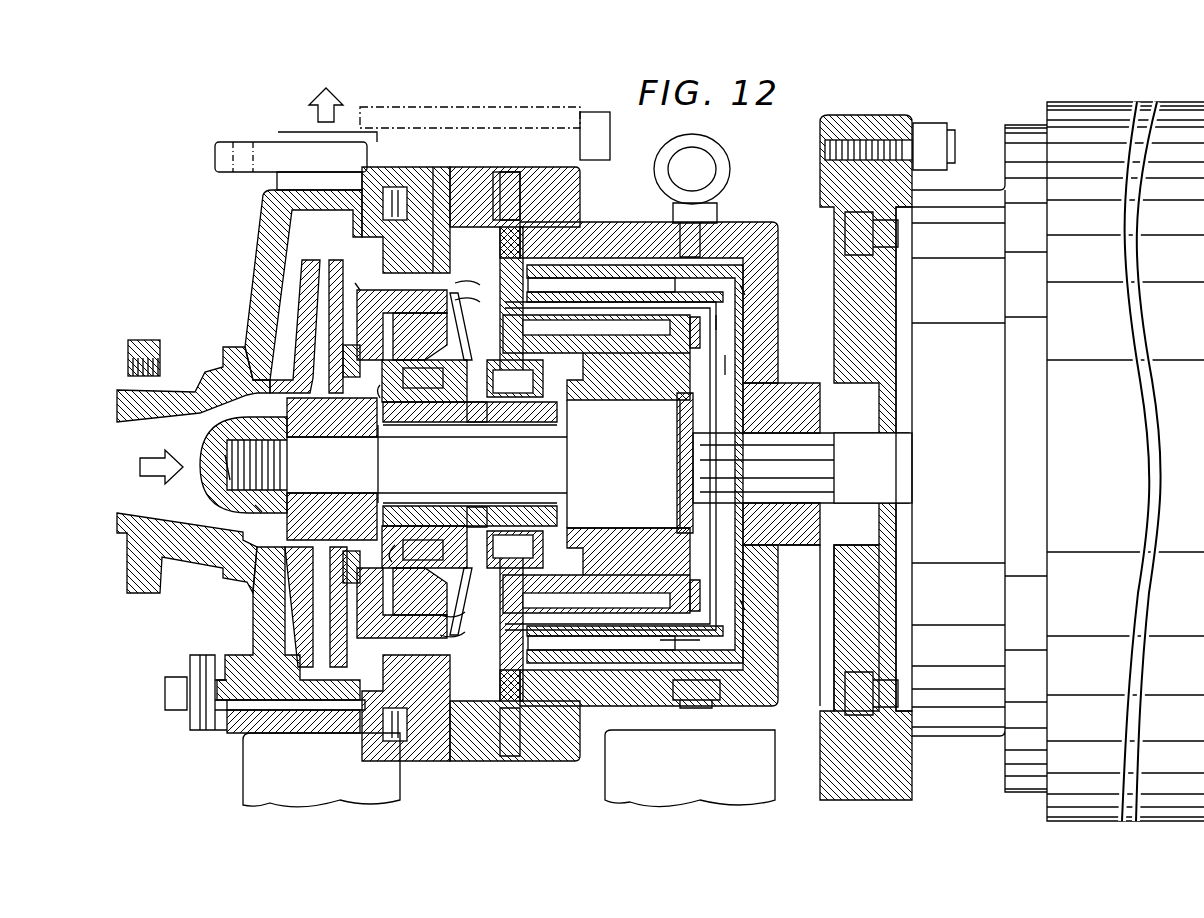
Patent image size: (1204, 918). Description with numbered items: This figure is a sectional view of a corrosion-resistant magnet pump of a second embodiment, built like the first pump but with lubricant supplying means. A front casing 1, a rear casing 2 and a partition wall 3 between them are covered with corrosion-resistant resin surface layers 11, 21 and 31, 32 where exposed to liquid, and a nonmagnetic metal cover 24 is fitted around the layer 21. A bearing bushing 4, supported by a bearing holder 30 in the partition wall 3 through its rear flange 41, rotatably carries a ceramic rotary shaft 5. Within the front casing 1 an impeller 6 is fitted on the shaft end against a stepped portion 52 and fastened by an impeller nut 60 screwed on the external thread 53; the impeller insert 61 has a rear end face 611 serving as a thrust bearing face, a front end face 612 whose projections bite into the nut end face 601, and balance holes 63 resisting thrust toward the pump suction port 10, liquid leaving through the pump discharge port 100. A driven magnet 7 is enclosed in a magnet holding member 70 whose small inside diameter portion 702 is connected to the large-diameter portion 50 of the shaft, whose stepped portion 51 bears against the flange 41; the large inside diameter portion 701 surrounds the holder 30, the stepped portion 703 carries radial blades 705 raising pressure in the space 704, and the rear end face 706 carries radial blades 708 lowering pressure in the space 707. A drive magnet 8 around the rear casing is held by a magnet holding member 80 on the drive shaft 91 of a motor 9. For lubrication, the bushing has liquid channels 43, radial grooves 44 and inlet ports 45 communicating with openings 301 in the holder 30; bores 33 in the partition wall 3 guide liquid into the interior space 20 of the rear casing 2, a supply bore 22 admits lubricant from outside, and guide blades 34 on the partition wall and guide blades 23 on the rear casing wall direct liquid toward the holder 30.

The front casing 1 is at (245, 345).
The rear casing 2 is at (560, 210).
The partition wall 3 is at (268, 245).
The bearing bushing 4 is at (470, 420).
The rotary shaft 5 is at (655, 650).
The impeller 6 is at (318, 330).
The driven magnet 7 is at (700, 660).
The drive magnet 8 is at (600, 640).
The motor 9 is at (1100, 468).
The pump suction port 10 is at (135, 486).
The surface layer 11 is at (205, 385).
The interior space 20 is at (402, 464).
The surface layer 21 is at (468, 312).
The supply bore 22 is at (503, 150).
The guide blades 23 is at (500, 725).
The cover 24 is at (735, 255).
The bearing holder 30 is at (540, 285).
The surface layer 31 is at (355, 285).
The surface layer 32 is at (440, 248).
The bores 33 is at (420, 690).
The guide blades 34 is at (439, 459).
The flange 41 is at (545, 405).
The liquid channels 43 is at (433, 425).
The radial grooves 44 is at (556, 428).
The inlet ports 45 is at (478, 505).
The large-diameter portion 50 is at (705, 463).
The stepped portion 51 is at (578, 405).
The stepped portion 52 is at (380, 490).
The external thread 53 is at (230, 467).
The impeller nut 60 is at (210, 440).
The insert 61 is at (290, 405).
The balance holes 63 is at (420, 464).
The magnet holding member 70 is at (590, 305).
The magnet holding member 80 is at (770, 680).
The drive shaft 91 is at (805, 548).
The pump discharge port 100 is at (295, 133).
The openings 301 is at (465, 612).
The nut end face 601 is at (260, 510).
The rear end face 611 is at (360, 482).
The front end face 612 is at (289, 445).
The large inside diameter portion 701 is at (505, 525).
The small inside diameter portion 702 is at (665, 540).
The stepped portion 703 is at (590, 590).
The space 704 is at (615, 655).
The radial blades 705 is at (680, 500).
The rear end face 706 is at (720, 322).
The space 707 is at (730, 365).
The radial blades 708 is at (745, 605).